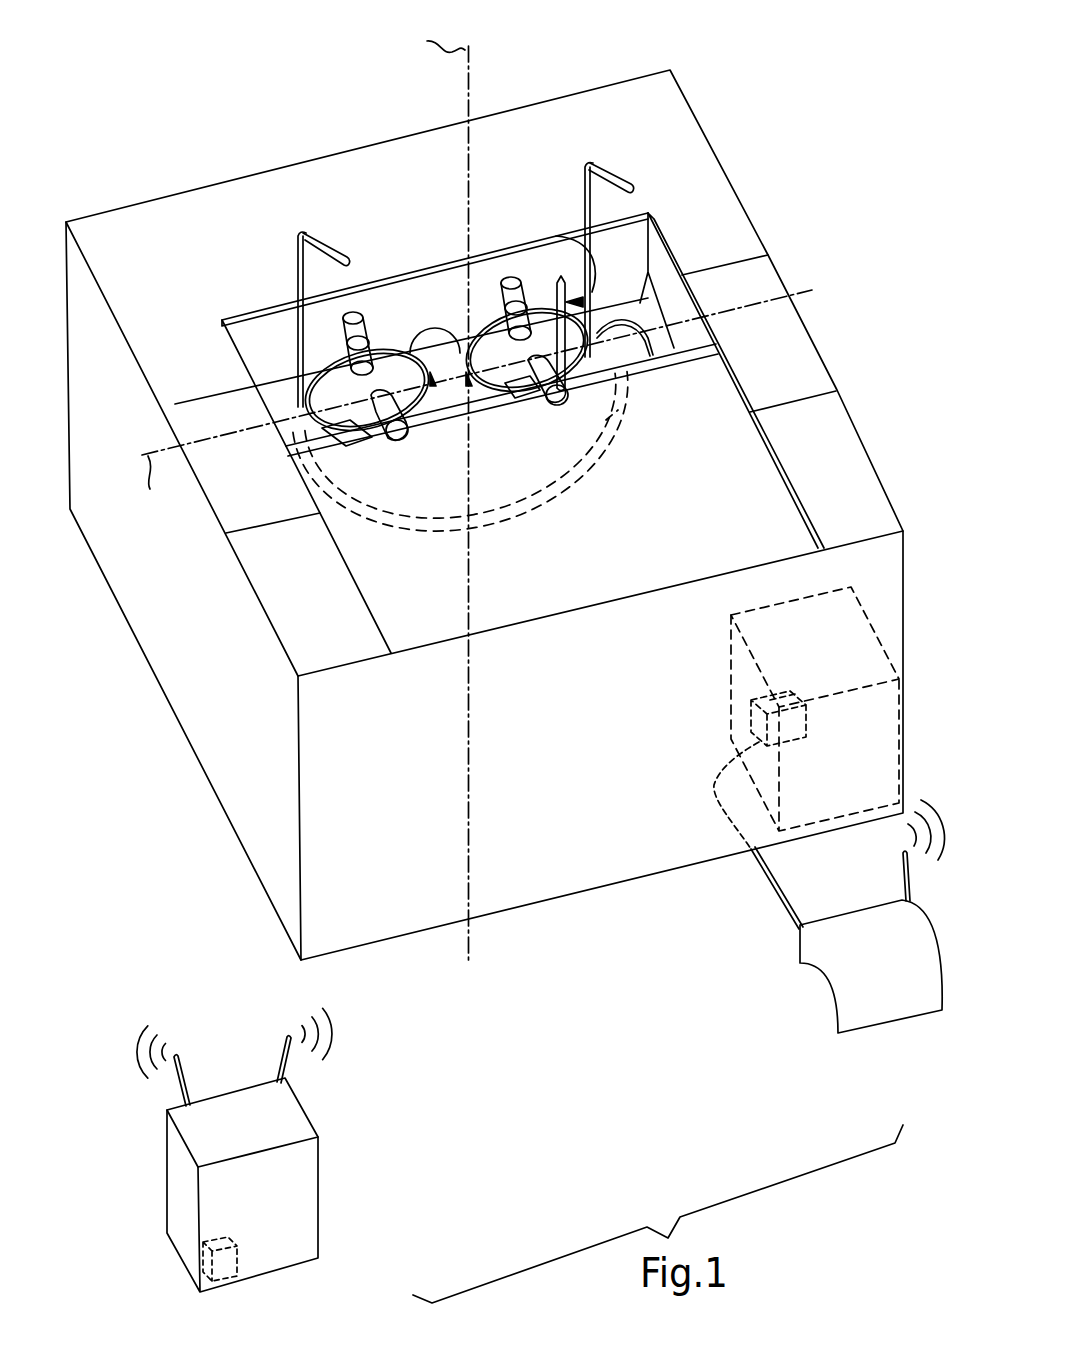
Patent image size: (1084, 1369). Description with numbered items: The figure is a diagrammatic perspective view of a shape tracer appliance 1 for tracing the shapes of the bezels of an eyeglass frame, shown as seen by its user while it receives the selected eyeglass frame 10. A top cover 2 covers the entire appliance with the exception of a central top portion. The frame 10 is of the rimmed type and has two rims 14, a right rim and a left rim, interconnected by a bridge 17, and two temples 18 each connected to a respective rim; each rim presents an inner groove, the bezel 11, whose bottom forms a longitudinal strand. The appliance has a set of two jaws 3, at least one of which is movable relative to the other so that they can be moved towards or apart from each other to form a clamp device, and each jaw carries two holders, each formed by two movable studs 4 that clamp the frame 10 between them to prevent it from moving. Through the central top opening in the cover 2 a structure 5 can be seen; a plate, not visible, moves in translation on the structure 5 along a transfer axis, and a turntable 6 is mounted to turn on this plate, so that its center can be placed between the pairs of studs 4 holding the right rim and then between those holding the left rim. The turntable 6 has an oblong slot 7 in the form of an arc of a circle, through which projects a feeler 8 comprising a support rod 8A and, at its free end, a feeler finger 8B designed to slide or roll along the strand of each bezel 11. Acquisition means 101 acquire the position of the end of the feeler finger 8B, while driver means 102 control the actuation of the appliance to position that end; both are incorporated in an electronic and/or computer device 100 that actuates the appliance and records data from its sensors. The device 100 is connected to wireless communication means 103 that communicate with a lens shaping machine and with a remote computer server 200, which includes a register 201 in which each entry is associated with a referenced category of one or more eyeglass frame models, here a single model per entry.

The shape tracer appliance 1 is at (207, 138).
The top cover 2 is at (841, 437).
The jaws 3 is at (248, 318).
The movable studs 4 is at (343, 360).
The structure 5 is at (637, 345).
The turntable 6 is at (297, 432).
The oblong slot 7 is at (533, 420).
The feeler 8 is at (597, 297).
The support rod 8A is at (614, 430).
The feeler finger 8B is at (578, 242).
The eyeglass frame 10 is at (336, 246).
The bezel 11 is at (326, 372).
The rims 14 is at (342, 444).
The bridge 17 is at (427, 340).
The temples 18 is at (296, 250).
The electronic and/or computer device 100 is at (826, 806).
The acquisition means 101 is at (749, 724).
The driver means 102 is at (804, 718).
The communication means 103 is at (815, 973).
The computer server 200 is at (303, 1180).
The register 201 is at (232, 1260).